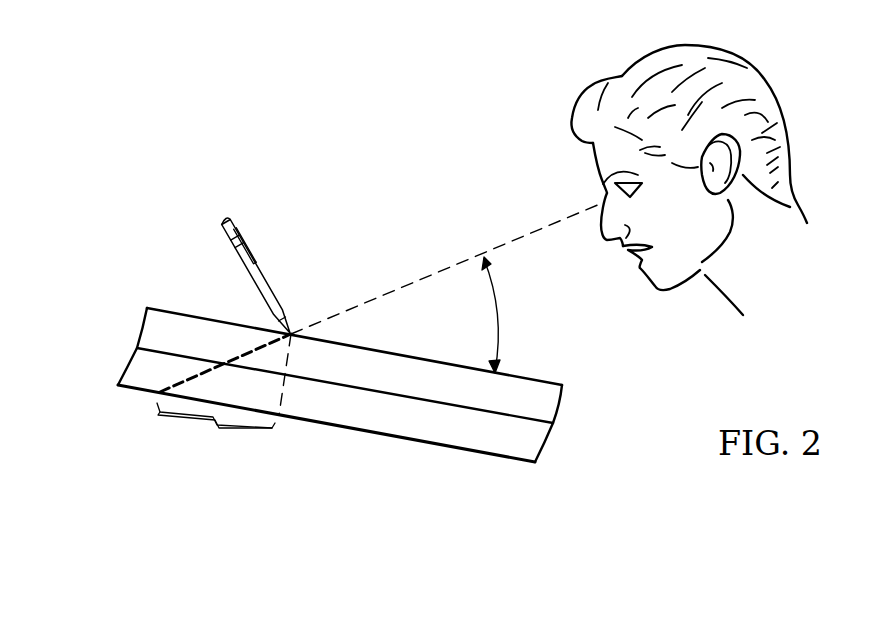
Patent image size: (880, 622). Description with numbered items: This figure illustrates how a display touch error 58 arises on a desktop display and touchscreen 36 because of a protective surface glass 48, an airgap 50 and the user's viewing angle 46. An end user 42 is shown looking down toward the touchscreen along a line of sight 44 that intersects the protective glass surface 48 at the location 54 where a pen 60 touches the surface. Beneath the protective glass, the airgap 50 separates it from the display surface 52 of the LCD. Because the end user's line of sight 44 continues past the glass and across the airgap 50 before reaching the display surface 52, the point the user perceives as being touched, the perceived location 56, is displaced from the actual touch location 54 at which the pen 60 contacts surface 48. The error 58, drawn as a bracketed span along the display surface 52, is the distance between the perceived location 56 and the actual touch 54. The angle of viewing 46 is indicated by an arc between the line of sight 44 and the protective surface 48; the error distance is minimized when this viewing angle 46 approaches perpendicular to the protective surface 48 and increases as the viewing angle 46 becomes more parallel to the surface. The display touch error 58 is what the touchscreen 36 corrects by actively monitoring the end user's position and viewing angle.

The desktop display and touchscreen 36 is at (587, 383).
The end user 42 is at (747, 57).
The line of sight 44 is at (443, 270).
The viewing angle 46 is at (500, 312).
The protective surface glass 48 is at (146, 327).
The airgap 50 is at (533, 443).
The display surface 52 is at (483, 443).
The actual touch location 54 is at (279, 418).
The perceived location 56 is at (155, 400).
The display touch error 58 is at (216, 444).
The pen 60 is at (262, 277).